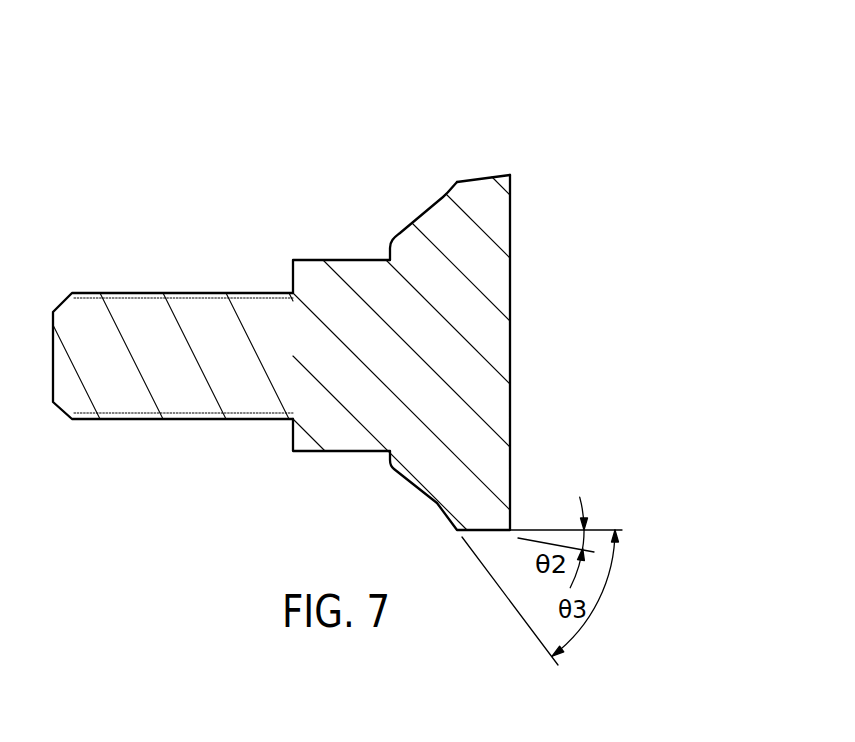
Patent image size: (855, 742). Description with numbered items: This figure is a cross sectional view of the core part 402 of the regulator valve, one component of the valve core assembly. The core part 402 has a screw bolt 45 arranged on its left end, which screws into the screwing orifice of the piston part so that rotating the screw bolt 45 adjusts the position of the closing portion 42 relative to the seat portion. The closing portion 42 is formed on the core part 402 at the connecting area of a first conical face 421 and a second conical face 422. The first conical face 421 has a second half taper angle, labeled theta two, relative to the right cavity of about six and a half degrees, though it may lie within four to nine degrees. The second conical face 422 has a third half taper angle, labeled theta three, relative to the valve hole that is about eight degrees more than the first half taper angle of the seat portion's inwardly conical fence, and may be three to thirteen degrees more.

The core part 402 is at (252, 207).
The screw bolt 45 is at (195, 293).
The closing portion 42 is at (418, 290).
The first conical face 421 is at (487, 176).
The second conical face 422 is at (447, 195).